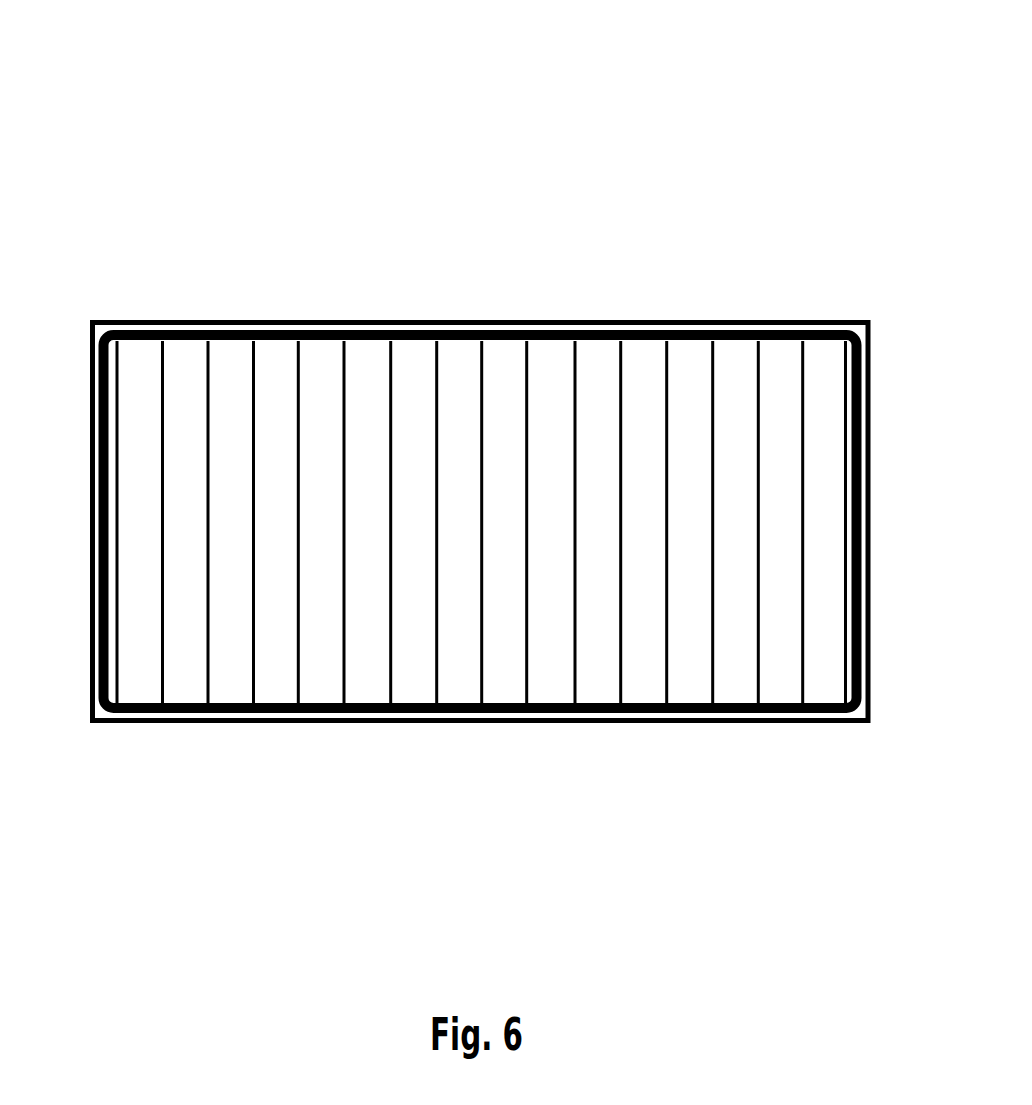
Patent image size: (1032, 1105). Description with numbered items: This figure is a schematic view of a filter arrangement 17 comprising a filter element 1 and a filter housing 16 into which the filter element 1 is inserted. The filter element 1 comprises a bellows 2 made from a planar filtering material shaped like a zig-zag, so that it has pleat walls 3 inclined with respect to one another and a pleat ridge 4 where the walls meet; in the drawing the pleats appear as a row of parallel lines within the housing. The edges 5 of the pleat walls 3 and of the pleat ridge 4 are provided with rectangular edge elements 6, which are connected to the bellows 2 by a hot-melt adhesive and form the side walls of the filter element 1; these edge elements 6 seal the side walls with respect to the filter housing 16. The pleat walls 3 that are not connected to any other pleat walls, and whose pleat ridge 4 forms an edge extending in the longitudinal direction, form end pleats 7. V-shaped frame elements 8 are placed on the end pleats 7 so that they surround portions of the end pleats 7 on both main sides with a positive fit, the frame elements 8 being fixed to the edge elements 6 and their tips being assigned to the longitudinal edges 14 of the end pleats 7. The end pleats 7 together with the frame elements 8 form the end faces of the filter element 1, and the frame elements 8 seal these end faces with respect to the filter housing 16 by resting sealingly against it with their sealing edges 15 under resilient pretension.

The filter element 1 is at (733, 462).
The bellows 2 is at (640, 464).
The pleat walls 3 is at (505, 372).
The pleat ridge 4 is at (528, 340).
The edges 5 is at (298, 332).
The edge elements 6 is at (222, 324).
The end pleats 7 is at (137, 672).
The frame elements 8 is at (108, 498).
The longitudinal edges 14 is at (117, 607).
The sealing edge 15 is at (93, 408).
The filter housing 16 is at (90, 722).
The filter arrangement 17 is at (178, 140).